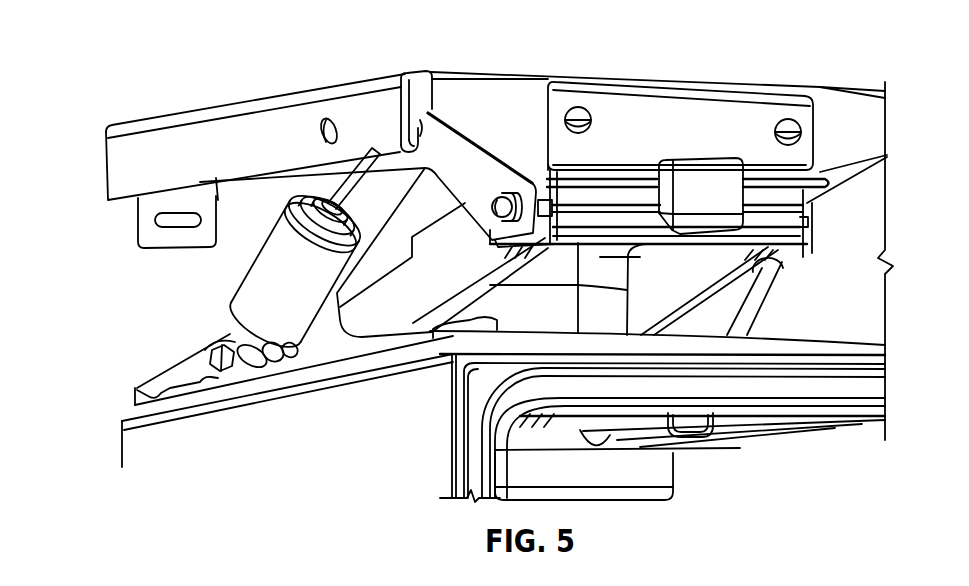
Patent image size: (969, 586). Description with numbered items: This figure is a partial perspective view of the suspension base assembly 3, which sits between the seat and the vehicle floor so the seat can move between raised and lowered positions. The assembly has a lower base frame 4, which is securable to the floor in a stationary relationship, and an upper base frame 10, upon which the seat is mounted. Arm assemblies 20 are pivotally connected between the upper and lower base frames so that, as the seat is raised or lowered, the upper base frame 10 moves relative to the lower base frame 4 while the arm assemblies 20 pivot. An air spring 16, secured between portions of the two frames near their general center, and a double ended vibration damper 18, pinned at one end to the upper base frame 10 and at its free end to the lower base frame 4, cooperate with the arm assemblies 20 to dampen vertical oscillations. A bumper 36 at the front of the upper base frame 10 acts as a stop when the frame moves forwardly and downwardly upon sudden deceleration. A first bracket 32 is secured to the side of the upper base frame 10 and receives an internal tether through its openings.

The suspension base assembly 3 is at (129, 69).
The lower base frame 4 is at (472, 477).
The upper base frame 10 is at (261, 97).
The air spring 16 is at (622, 286).
The double ended vibration damper 18 is at (257, 297).
The arm assembly 20 is at (725, 284).
The first bracket 32 is at (147, 215).
The bumper 36 is at (712, 172).